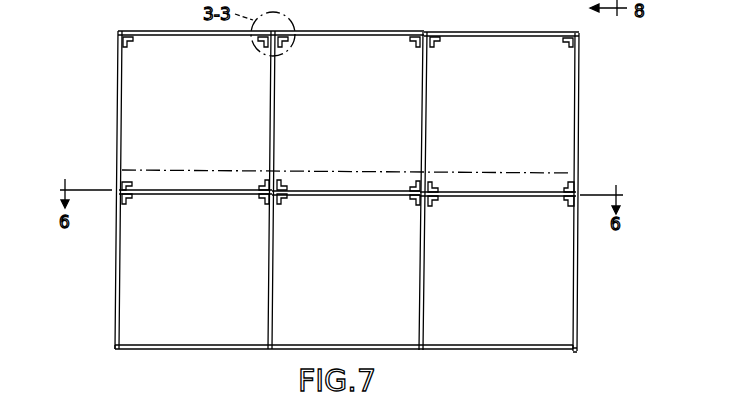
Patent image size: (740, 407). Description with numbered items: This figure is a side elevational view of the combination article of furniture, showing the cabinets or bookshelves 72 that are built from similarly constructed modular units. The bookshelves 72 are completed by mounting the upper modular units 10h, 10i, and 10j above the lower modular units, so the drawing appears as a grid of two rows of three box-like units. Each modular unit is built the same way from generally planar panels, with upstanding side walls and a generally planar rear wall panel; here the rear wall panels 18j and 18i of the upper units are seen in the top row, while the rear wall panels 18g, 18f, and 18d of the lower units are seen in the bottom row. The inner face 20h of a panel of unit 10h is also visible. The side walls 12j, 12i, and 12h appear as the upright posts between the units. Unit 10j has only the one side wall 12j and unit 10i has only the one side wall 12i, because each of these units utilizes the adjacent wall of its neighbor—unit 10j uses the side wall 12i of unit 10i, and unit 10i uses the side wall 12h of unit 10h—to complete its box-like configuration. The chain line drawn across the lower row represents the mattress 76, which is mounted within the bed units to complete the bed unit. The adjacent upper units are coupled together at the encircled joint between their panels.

The modular unit 10j is at (150, 28).
The modular unit 10i is at (331, 26).
The modular unit 10h is at (464, 28).
The side wall 12j is at (122, 112).
The side wall 12i is at (274, 112).
The side wall 12h is at (426, 114).
The rear wall panel 18j is at (200, 36).
The rear wall panel 18i is at (350, 37).
The inner face 20h is at (510, 38).
The rear wall panel 18g is at (190, 190).
The rear wall panel 18f is at (322, 192).
The rear wall panel 18d is at (470, 193).
The mattress 76 is at (150, 169).
The bookshelves 72 is at (100, 73).